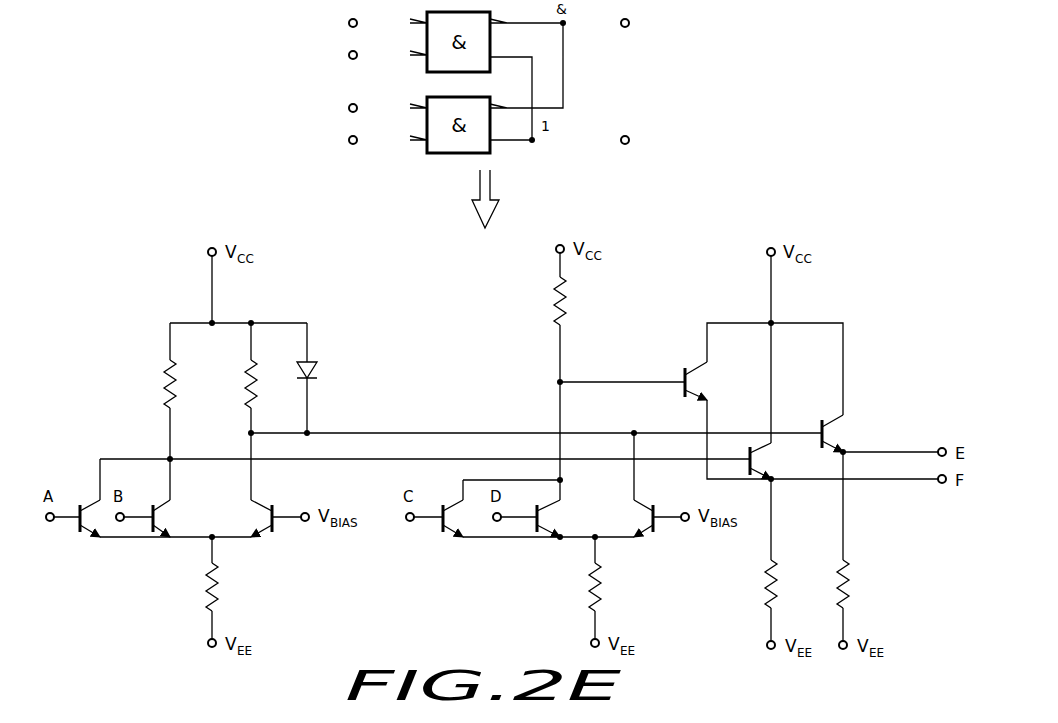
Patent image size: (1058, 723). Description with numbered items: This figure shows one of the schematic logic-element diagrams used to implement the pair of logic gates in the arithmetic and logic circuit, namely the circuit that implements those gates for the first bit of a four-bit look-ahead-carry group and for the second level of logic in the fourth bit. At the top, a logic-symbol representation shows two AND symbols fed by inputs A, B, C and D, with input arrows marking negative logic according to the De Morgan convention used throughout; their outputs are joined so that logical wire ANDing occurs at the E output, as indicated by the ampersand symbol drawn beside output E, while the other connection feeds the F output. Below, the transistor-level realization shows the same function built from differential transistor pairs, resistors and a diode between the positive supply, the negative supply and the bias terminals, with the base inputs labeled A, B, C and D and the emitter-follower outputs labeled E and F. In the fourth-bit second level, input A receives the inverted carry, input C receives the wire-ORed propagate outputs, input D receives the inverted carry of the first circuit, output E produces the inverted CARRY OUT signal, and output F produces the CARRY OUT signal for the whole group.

The A input A is at (427, 23).
The B input B is at (427, 55).
The C input C is at (427, 108).
The D input D is at (427, 140).
The E output E is at (563, 23).
The F output F is at (532, 140).